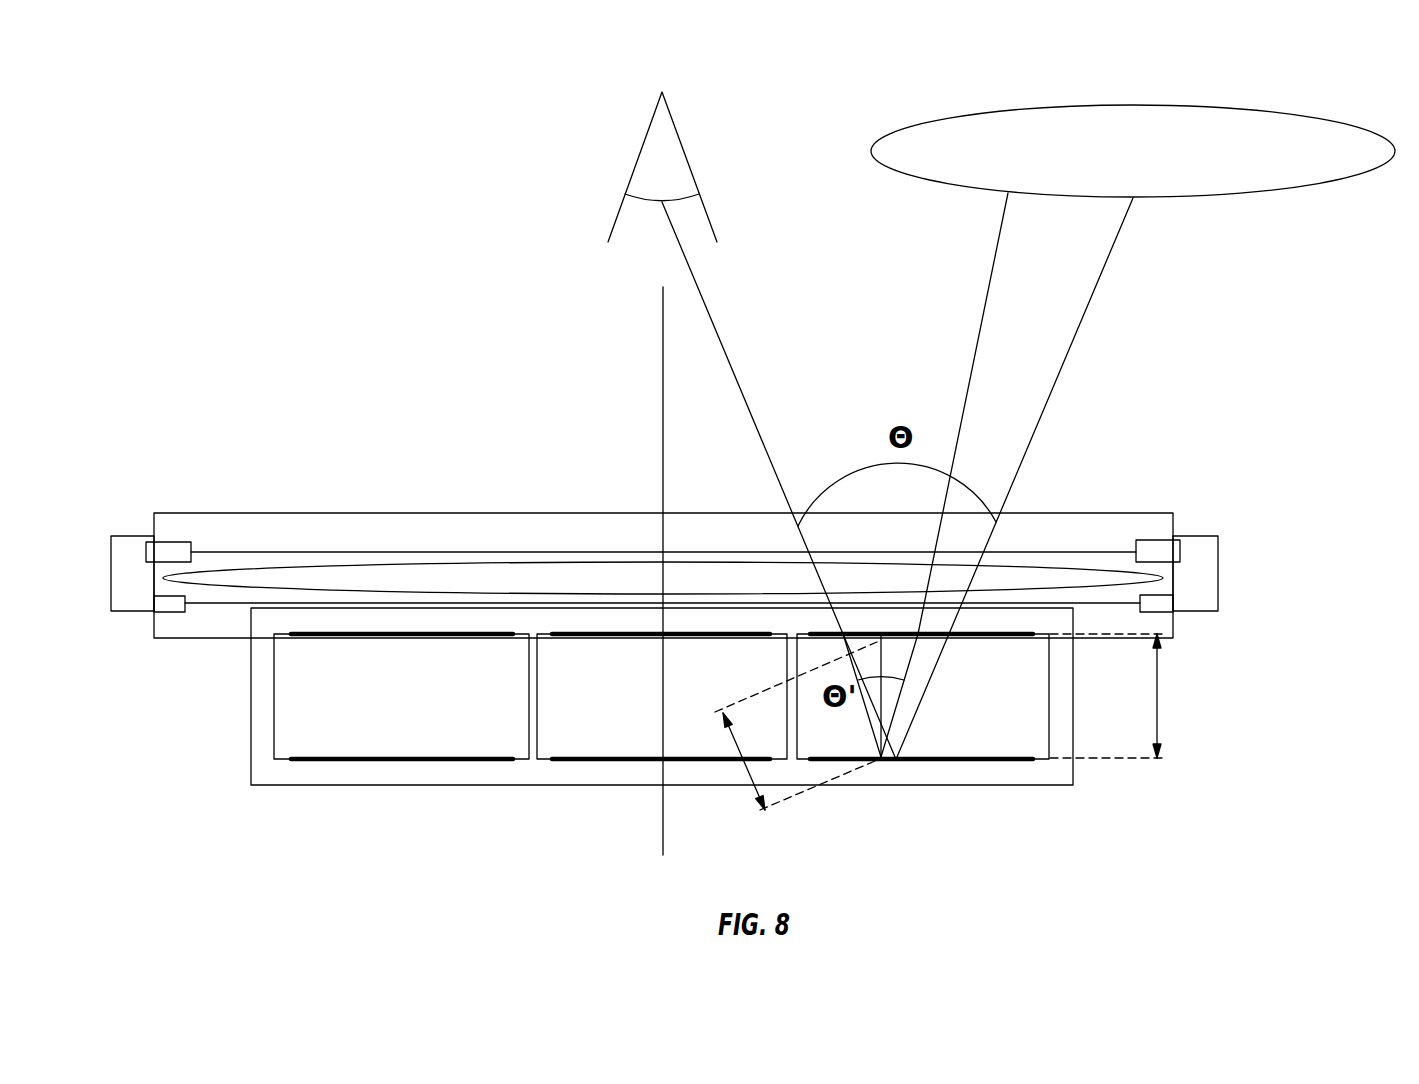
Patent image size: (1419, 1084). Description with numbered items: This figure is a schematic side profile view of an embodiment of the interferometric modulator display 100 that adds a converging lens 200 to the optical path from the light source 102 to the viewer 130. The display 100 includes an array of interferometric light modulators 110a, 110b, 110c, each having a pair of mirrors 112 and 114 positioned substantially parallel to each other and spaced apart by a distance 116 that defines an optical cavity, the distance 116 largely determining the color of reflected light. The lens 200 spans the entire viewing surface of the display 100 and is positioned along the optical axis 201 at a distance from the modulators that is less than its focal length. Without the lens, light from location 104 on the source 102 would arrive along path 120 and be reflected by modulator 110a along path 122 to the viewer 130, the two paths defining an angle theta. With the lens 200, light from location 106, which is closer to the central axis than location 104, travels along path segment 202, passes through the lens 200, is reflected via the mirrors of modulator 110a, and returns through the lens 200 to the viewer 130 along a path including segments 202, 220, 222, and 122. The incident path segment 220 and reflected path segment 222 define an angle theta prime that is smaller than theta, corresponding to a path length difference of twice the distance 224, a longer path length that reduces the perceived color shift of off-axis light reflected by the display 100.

The interferometric modulator display 100 is at (322, 785).
The light source 102 is at (1265, 110).
The location 104 is at (1133, 198).
The location 106 is at (965, 187).
The interferometric light modulator 110a is at (802, 633).
The interferometric light modulator 110b is at (543, 633).
The interferometric light modulator 110c is at (283, 636).
The mirror 112 is at (1022, 760).
The mirror 114 is at (977, 582).
The distance 116 is at (1159, 700).
The path 120 is at (1080, 327).
The path 122 is at (733, 369).
The viewer 130 is at (643, 141).
The converging lens 200 is at (403, 563).
The optical axis 201 is at (662, 322).
The path segment 202 is at (980, 328).
The incident path segment 220 is at (1023, 632).
The reflected path segment 222 is at (872, 718).
The distance 224 is at (746, 772).